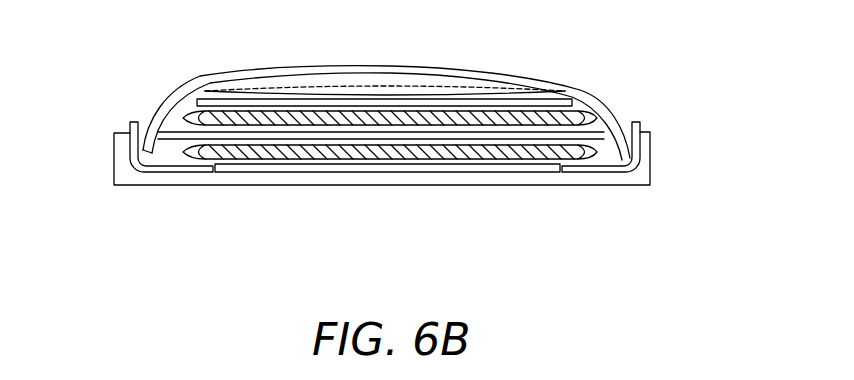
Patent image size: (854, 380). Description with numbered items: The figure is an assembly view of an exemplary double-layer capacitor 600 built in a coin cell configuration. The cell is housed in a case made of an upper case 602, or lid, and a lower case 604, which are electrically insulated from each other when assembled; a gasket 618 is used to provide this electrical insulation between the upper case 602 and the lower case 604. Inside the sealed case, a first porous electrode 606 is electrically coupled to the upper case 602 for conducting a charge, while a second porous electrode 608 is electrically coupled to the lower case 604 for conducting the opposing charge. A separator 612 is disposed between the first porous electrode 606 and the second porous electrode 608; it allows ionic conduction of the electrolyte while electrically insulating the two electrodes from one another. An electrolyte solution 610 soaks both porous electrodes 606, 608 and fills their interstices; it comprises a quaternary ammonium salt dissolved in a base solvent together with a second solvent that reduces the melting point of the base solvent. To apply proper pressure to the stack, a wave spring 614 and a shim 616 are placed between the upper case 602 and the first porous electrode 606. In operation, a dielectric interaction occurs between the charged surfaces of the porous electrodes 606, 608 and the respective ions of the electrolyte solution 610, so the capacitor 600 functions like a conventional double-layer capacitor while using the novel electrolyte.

The double-layer capacitor 600 is at (652, 36).
The upper case 602 is at (217, 73).
The lower case 604 is at (173, 185).
The first porous electrode 606 is at (153, 129).
The second porous electrode 608 is at (358, 150).
The electrolyte solution 610 is at (597, 136).
The separator 612 is at (165, 133).
The wave spring 614 is at (372, 90).
The shim 616 is at (478, 106).
The gasket 618 is at (530, 166).